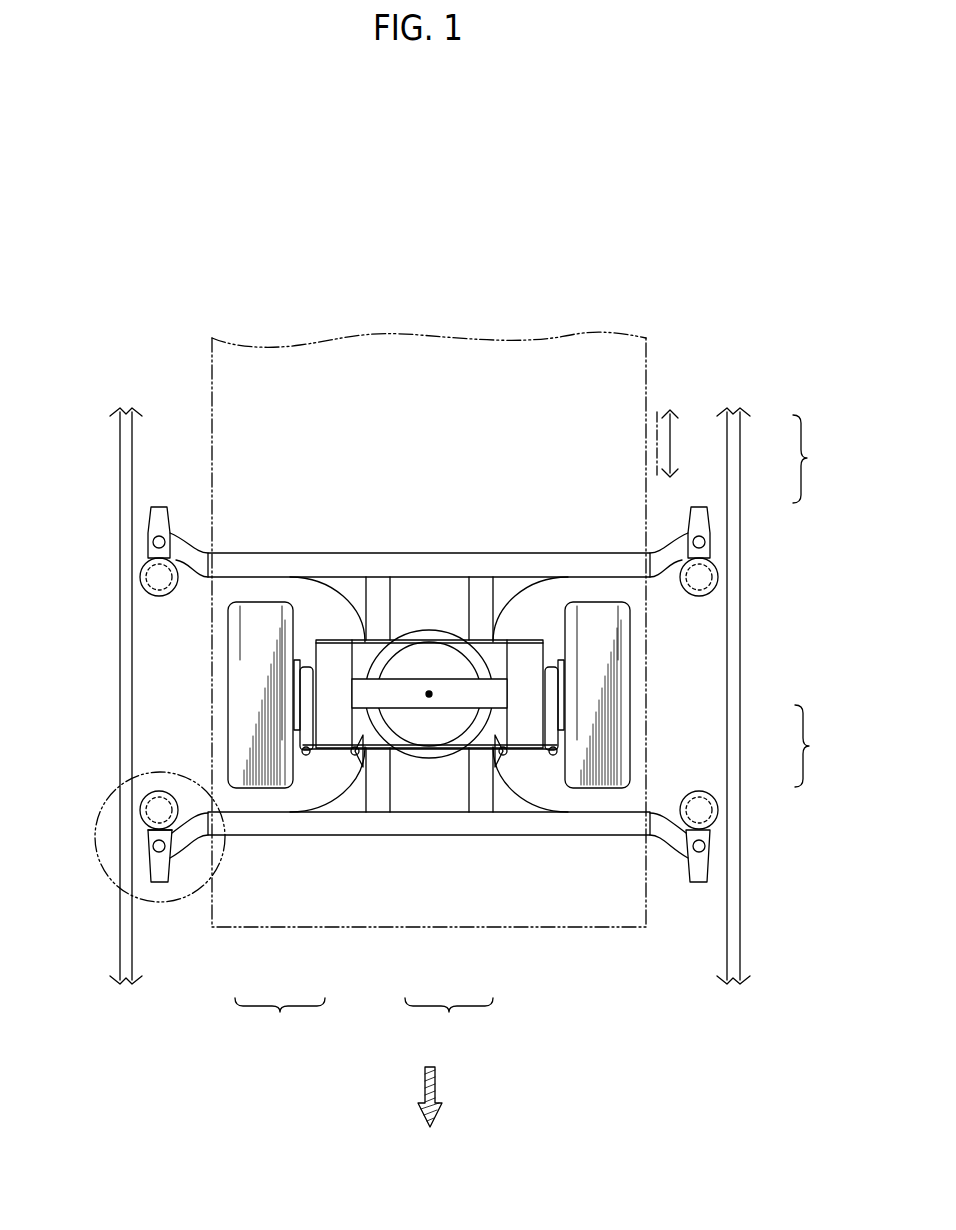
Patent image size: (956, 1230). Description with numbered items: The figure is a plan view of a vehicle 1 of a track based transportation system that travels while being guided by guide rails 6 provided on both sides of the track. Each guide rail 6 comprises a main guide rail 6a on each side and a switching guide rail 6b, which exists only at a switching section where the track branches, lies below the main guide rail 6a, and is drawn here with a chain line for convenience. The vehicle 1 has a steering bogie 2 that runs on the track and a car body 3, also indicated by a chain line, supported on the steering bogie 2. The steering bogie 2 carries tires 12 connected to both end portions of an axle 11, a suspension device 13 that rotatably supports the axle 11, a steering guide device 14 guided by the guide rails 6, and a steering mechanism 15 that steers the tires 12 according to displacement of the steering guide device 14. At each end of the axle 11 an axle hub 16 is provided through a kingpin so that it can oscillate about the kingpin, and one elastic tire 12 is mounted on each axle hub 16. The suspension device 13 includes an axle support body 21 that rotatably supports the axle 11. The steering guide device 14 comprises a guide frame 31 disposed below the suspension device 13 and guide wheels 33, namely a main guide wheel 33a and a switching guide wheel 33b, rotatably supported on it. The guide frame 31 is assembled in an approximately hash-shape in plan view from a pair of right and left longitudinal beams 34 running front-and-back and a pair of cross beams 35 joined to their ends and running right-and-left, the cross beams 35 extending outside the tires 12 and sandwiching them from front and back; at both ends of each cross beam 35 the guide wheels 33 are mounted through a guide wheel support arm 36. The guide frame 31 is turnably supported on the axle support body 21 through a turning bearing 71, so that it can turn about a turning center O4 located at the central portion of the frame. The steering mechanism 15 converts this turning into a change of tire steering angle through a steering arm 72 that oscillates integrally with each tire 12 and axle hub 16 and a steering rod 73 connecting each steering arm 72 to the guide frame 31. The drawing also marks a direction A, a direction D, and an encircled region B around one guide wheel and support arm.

The vehicle 1 is at (728, 318).
The steering bogie 2 is at (530, 536).
The car body 3 is at (205, 408).
The guide rail 6 is at (808, 459).
The main guide rail 6a is at (740, 476).
The switching guide rail 6b is at (673, 445).
The axle 11 is at (387, 697).
The tire 12 is at (623, 668).
The suspension device 13 is at (571, 669).
The steering guide device 14 is at (589, 548).
The steering mechanism 15 is at (280, 1020).
The axle hub 16 is at (553, 693).
The axle support body 21 is at (540, 652).
The guide frame 31 is at (449, 1019).
The guide wheel 33 is at (489, 767).
The main guide wheel 33a is at (707, 782).
The switching guide wheel 33b is at (714, 800).
The longitudinal beam 34 is at (378, 800).
The cross beam 35 is at (479, 825).
The guide wheel support arm 36 is at (705, 865).
The turning bearing 71 is at (430, 628).
The steering arm 72 is at (303, 742).
The steering rod 73 is at (328, 752).
The turning center O4 is at (429, 697).
The direction A is at (537, 1012).
The region B is at (103, 875).
The direction D is at (436, 1086).